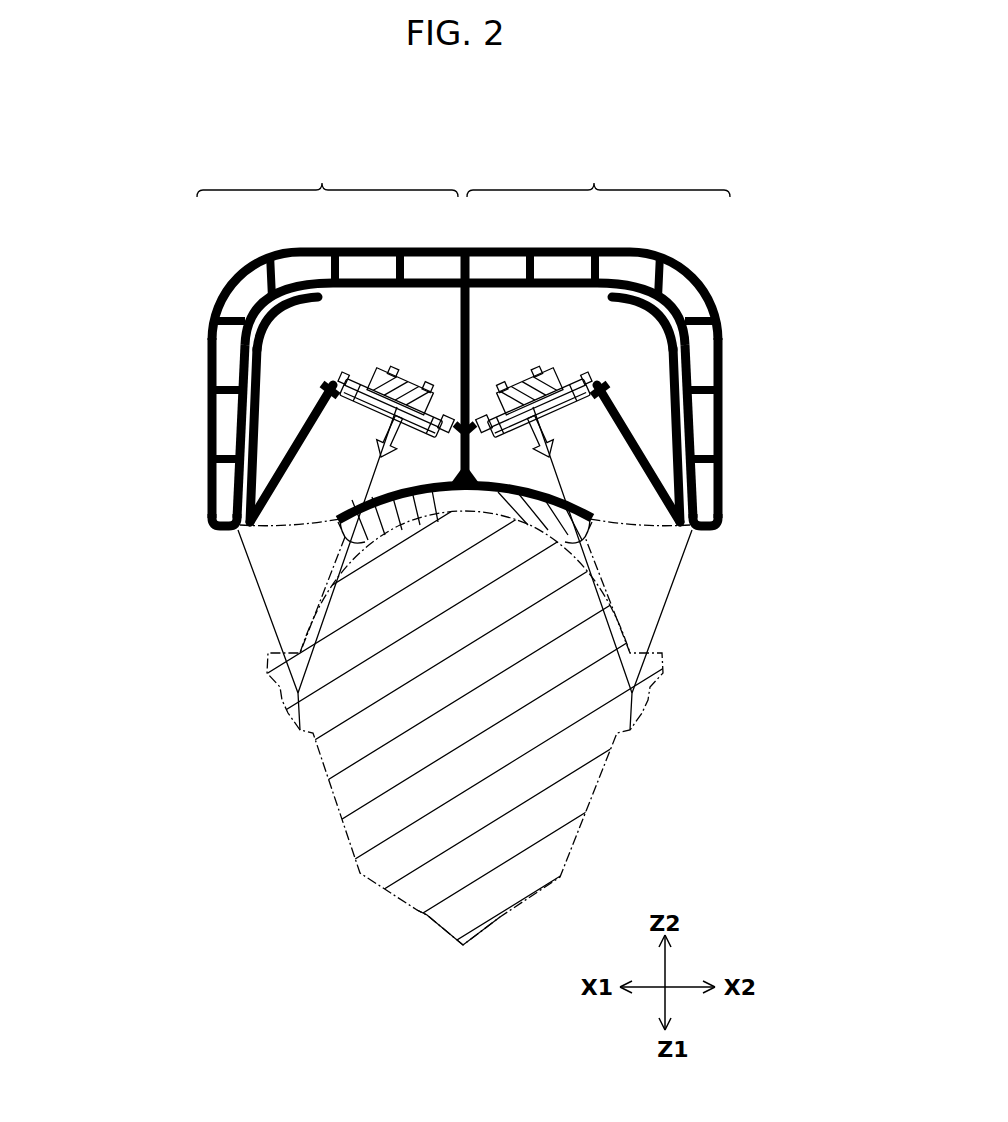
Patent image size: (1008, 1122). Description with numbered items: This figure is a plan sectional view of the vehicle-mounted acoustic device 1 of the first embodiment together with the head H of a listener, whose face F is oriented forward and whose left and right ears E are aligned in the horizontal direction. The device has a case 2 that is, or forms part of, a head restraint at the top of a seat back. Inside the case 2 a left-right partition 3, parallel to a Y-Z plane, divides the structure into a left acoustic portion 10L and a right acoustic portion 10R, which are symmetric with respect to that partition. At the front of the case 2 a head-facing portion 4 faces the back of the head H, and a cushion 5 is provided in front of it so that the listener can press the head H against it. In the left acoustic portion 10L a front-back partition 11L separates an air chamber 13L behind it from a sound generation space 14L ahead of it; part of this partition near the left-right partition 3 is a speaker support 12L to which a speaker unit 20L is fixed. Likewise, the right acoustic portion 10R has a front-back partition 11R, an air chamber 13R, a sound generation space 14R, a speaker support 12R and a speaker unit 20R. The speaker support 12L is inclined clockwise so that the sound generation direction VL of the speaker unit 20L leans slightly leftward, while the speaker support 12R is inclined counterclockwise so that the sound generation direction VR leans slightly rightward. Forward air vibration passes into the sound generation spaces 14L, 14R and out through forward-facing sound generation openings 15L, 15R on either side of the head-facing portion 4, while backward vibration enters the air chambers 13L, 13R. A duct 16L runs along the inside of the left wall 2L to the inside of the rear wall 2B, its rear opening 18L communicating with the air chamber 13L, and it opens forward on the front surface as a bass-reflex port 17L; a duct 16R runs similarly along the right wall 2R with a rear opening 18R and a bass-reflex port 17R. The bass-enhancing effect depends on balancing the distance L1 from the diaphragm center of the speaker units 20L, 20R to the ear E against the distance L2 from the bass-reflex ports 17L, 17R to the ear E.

The vehicle-mounted acoustic device 1 is at (258, 123).
The left acoustic portion 10L is at (327, 172).
The right acoustic portion 10R is at (598, 172).
The case 2 is at (375, 248).
The rear wall 2B is at (466, 247).
The left wall 2L is at (207, 405).
The right wall 2R is at (722, 407).
The left-right partition 3 is at (470, 330).
The head-facing portion 4 is at (417, 523).
The cushion 5 is at (463, 517).
The front-back partition 11L is at (320, 410).
The front-back partition 11R is at (633, 400).
The speaker support 12L is at (333, 380).
The speaker support 12R is at (593, 380).
The air chamber 13L is at (317, 353).
The air chamber 13R is at (612, 348).
The sound generation space 14L is at (310, 465).
The sound generation space 14R is at (620, 465).
The sound generation opening 15L is at (291, 528).
The sound generation opening 15R is at (633, 530).
The duct 16L is at (245, 438).
The duct 16R is at (682, 432).
The bass-reflex port 17L is at (235, 530).
The bass-reflex port 17R is at (695, 530).
The rear opening 18L is at (317, 280).
The rear opening 18R is at (620, 275).
The speaker unit 20L is at (407, 367).
The speaker unit 20R is at (525, 357).
The head H is at (387, 812).
The face F is at (413, 907).
The ear E is at (643, 695).
The distance L1 is at (465, 550).
The distance L2 is at (466, 611).
The sound generation direction VL is at (398, 446).
The sound generation direction VR is at (534, 443).